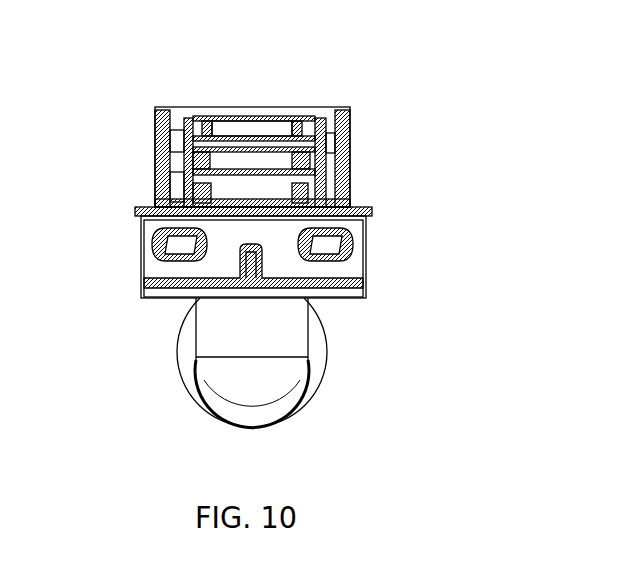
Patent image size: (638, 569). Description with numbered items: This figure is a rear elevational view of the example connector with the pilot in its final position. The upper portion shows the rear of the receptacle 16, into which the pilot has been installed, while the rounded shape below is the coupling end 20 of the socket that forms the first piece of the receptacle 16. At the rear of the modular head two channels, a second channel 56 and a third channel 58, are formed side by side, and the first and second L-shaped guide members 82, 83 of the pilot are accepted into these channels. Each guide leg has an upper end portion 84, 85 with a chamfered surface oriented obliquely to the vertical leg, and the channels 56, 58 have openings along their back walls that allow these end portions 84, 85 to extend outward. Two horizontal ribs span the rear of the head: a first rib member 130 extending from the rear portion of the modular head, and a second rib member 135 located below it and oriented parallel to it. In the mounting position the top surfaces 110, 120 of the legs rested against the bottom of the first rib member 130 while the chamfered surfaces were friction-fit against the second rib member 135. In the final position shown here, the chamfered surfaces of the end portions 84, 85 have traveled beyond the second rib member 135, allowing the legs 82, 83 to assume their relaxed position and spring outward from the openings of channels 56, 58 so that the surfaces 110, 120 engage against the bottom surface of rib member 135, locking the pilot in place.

The receptacle 16 is at (392, 238).
The coupling end 20 is at (300, 340).
The second channel 56 is at (295, 124).
The third channel 58 is at (208, 124).
The first L-shaped guide member 82 is at (202, 192).
The second L-shaped guide member 83 is at (298, 190).
The end portion 84 is at (300, 163).
The end portion 85 is at (200, 163).
The top surface 110 is at (307, 145).
The top surface 120 is at (190, 118).
The first rib member 130 is at (232, 118).
The second rib member 135 is at (253, 140).